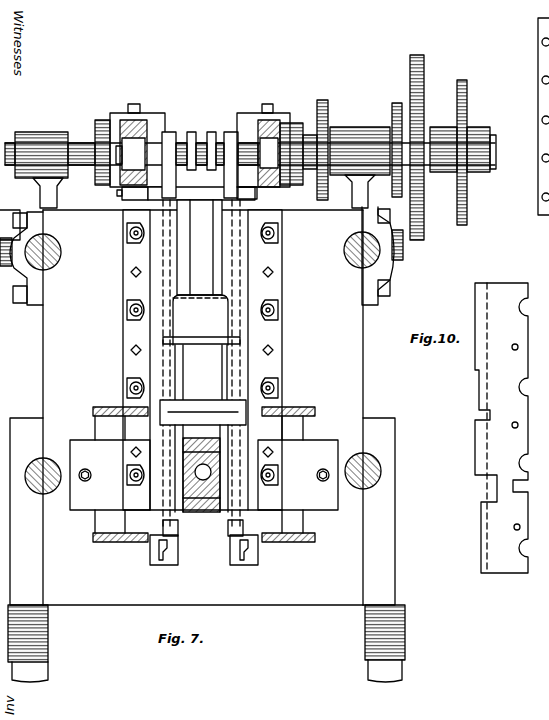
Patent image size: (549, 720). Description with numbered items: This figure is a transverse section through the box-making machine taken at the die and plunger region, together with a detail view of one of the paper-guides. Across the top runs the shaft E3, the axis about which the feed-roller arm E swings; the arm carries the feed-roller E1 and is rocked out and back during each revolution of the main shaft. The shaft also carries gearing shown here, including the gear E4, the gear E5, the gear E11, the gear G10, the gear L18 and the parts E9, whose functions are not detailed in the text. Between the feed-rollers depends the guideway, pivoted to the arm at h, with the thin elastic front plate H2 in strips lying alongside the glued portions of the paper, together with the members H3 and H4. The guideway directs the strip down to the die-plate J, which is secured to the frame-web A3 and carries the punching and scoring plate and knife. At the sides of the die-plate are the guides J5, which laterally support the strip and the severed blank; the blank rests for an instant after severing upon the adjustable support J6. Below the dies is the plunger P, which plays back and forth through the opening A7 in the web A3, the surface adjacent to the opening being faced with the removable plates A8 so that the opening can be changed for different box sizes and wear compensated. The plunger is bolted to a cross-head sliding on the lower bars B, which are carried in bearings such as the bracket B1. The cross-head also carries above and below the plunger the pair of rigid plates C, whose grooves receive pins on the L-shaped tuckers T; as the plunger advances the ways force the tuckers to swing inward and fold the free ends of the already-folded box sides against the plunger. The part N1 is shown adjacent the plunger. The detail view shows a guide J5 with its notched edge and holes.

In FIG. 7, the gear on main shaft E4 is at (36, 140).
In FIG. 7, the shaft E3 is at (82, 135).
In FIG. 7, the arm E is at (108, 132).
In FIG. 7, the feed-roller E1 is at (133, 120).
In FIG. 7, the bracket arms E9 is at (168, 131).
In FIG. 7, the front plate H2 is at (191, 131).
In FIG. 7, the cam disk H4 is at (211, 131).
In FIG. 7, the rod H3 is at (199, 247).
In FIG. 7, the gear E11 is at (322, 99).
In FIG. 7, the gear G10 is at (396, 102).
In FIG. 7, the large gear E5 is at (416, 54).
In FIG. 7, the gear L18 is at (470, 80).
In FIG. 7, the pivot h is at (117, 193).
In FIG. 7, the die-plate J is at (203, 360).
In FIG. 7, the guides J5 is at (202, 360).
In FIG. 10, the guides J5 is at (497, 333).
In FIG. 7, the support J6 is at (236, 554).
In FIG. 7, the frame-web A3 is at (83, 407).
In FIG. 7, the opening A7 is at (203, 532).
In FIG. 7, the removable plates A8 is at (204, 475).
In FIG. 7, the bars B is at (372, 470).
In FIG. 7, the bearing bracket B1 is at (375, 262).
In FIG. 7, the rigid plates C is at (93, 411).
In FIG. 7, the tuckers T is at (199, 474).
In FIG. 7, the plunger P is at (222, 472).
In FIG. 7, the nut N1 is at (199, 518).